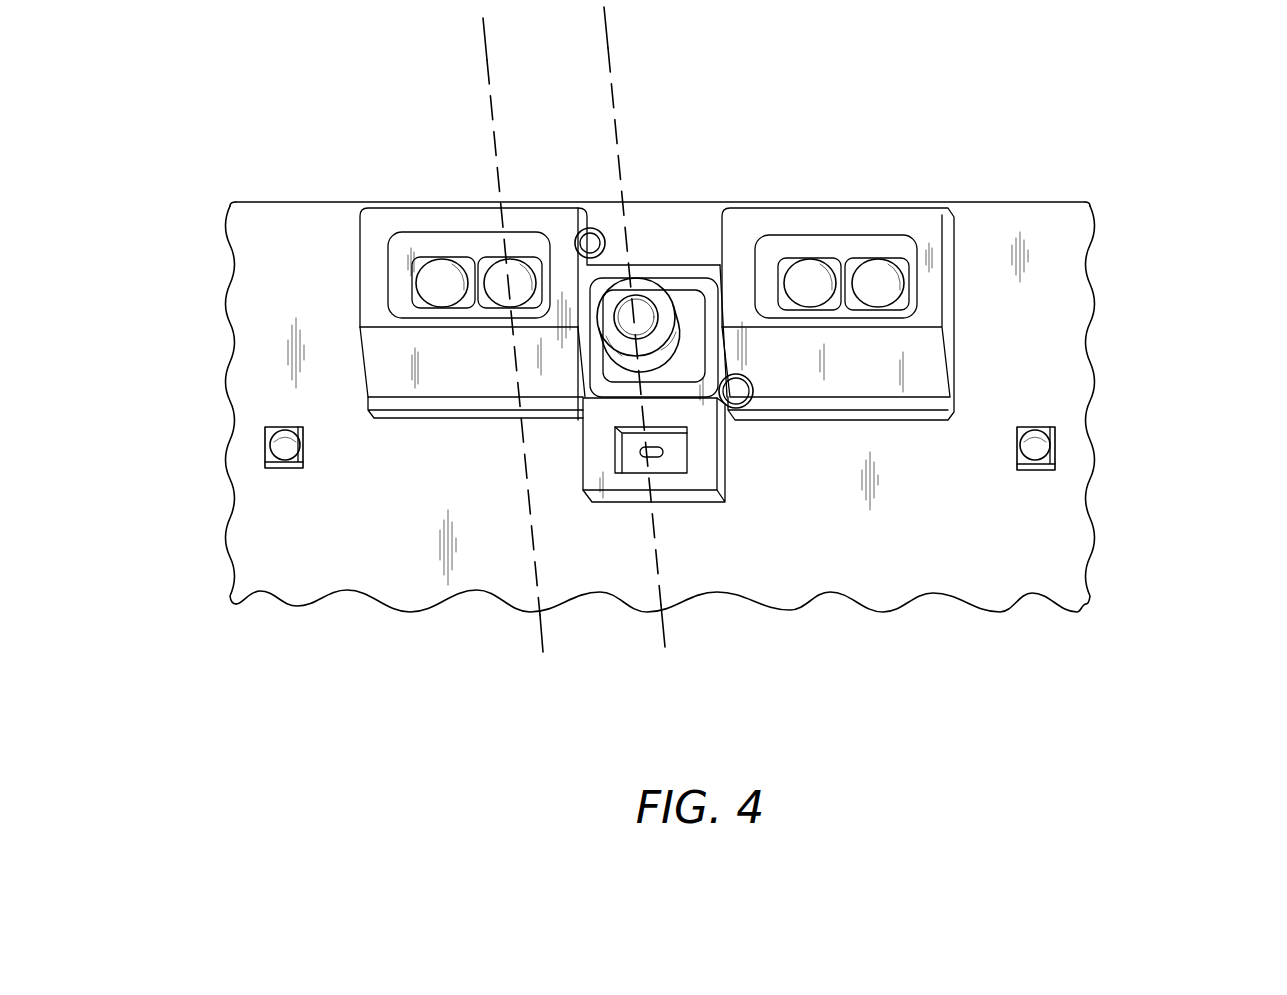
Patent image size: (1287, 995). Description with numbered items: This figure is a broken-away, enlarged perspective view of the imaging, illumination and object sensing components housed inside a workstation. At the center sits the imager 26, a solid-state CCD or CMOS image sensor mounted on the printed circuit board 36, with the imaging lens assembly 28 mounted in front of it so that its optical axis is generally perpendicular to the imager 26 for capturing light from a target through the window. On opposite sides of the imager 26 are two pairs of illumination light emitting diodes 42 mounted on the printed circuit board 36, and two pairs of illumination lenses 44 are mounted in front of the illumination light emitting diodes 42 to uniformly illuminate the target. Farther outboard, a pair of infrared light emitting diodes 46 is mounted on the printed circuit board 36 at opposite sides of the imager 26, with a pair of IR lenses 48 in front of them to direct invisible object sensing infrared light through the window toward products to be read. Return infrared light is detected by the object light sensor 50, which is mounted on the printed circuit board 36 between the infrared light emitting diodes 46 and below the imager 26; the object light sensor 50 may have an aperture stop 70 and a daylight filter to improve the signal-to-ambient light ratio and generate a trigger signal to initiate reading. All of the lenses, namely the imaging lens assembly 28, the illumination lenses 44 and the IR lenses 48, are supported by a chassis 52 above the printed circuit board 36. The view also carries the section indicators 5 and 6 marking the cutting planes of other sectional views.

The imager 26 is at (680, 239).
The imaging lens assembly 28 is at (633, 312).
The printed circuit board 36 is at (245, 400).
The illumination light emitting diodes 42 is at (626, 255).
The illumination lenses 44 is at (902, 177).
The infrared light emitting diodes 46 is at (660, 453).
The IR lenses 48 is at (265, 442).
The object light sensor 50 is at (708, 546).
The chassis 52 is at (640, 442).
The aperture stop 70 is at (663, 452).
The section line 5- 5 is at (603, 20).
The section line 6- 6 is at (482, 33).